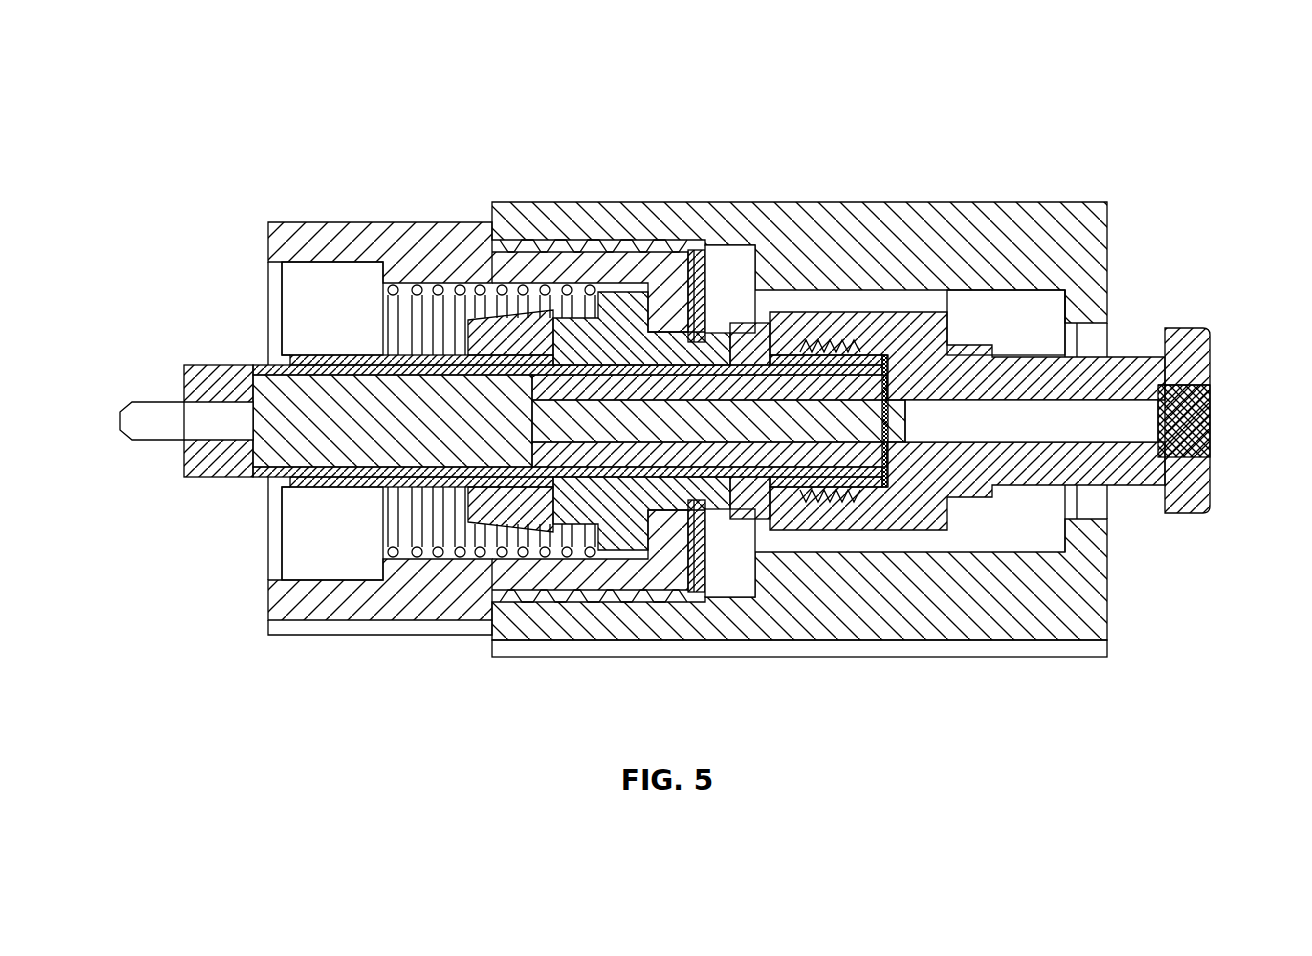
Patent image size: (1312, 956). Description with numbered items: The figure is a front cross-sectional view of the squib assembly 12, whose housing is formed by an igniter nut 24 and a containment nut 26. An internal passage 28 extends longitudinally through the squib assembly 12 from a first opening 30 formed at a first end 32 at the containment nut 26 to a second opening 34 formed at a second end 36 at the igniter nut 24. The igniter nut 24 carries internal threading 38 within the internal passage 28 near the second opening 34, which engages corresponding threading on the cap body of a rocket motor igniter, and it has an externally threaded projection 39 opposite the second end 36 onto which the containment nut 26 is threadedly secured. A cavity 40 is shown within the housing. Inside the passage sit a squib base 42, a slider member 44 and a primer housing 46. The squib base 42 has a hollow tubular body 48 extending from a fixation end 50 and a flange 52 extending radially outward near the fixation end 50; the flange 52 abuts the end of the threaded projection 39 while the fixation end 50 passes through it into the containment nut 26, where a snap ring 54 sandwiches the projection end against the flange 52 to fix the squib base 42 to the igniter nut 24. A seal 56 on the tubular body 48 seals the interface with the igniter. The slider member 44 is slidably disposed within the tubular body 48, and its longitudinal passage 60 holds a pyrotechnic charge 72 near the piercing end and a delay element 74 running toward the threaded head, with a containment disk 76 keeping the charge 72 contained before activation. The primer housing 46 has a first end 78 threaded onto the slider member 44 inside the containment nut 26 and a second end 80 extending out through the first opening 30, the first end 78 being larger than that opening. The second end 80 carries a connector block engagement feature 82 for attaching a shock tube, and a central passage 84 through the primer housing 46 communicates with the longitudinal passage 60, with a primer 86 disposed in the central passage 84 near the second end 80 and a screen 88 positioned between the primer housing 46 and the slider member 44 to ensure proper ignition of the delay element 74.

The squib assembly 12 is at (1058, 114).
The igniter nut 24 is at (300, 240).
The containment nut 26 is at (1110, 232).
The internal passage 28 is at (283, 262).
The first opening 30 is at (1092, 330).
The first end 32 is at (1108, 598).
The second opening 34 is at (268, 264).
The second end 36 is at (268, 605).
The internal threading 38 is at (420, 555).
The externally threaded projection 39 is at (540, 267).
The cavity 40 is at (985, 328).
The squib base 42 is at (625, 590).
The slider member 44 is at (242, 478).
The primer housing 46 is at (820, 312).
The hollow tubular body 48 is at (300, 488).
The fixation end 50 is at (675, 327).
The flange 52 is at (577, 565).
The snap ring 54 is at (700, 545).
The seal 56 is at (480, 318).
The longitudinal passage 60 is at (832, 462).
The pyrotechnic charge 72 is at (258, 390).
The delay element 74 is at (545, 560).
The containment disk 76 is at (253, 412).
The first end 78 is at (792, 532).
The second end 80 is at (1215, 480).
The connector block engagement feature 82 is at (1192, 515).
The central passage 84 is at (1208, 388).
The primer 86 is at (1215, 420).
The screen 88 is at (890, 380).